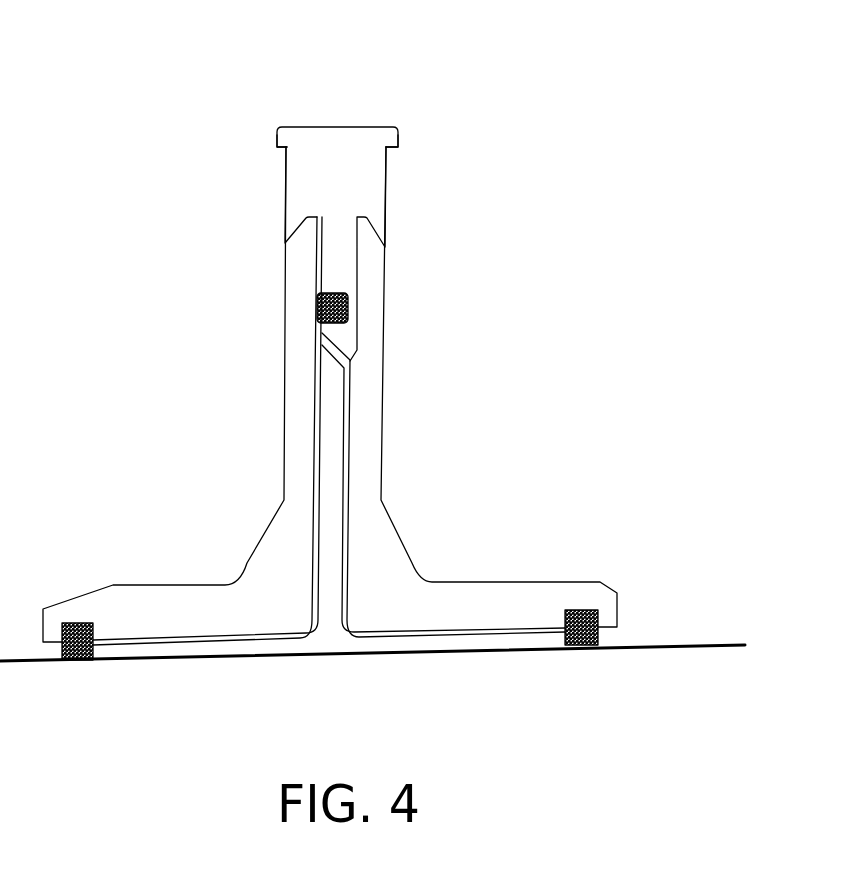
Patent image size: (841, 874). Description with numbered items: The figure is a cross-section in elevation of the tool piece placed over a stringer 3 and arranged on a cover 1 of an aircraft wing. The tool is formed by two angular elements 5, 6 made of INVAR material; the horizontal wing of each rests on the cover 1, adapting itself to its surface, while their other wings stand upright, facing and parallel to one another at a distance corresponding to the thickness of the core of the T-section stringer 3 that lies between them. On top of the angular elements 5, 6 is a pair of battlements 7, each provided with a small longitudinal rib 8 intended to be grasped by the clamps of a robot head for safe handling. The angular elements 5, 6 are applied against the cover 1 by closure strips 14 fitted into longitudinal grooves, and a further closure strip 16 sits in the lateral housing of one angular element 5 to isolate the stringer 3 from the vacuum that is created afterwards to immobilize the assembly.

The cover 1 is at (703, 642).
The stringer 3 is at (328, 472).
The angular element 5 is at (370, 378).
The angular element 6 is at (286, 418).
The battlement 7 is at (350, 140).
The longitudinal rib 8 is at (277, 135).
The closure strip 14 is at (82, 662).
The closure strip 16 is at (347, 307).